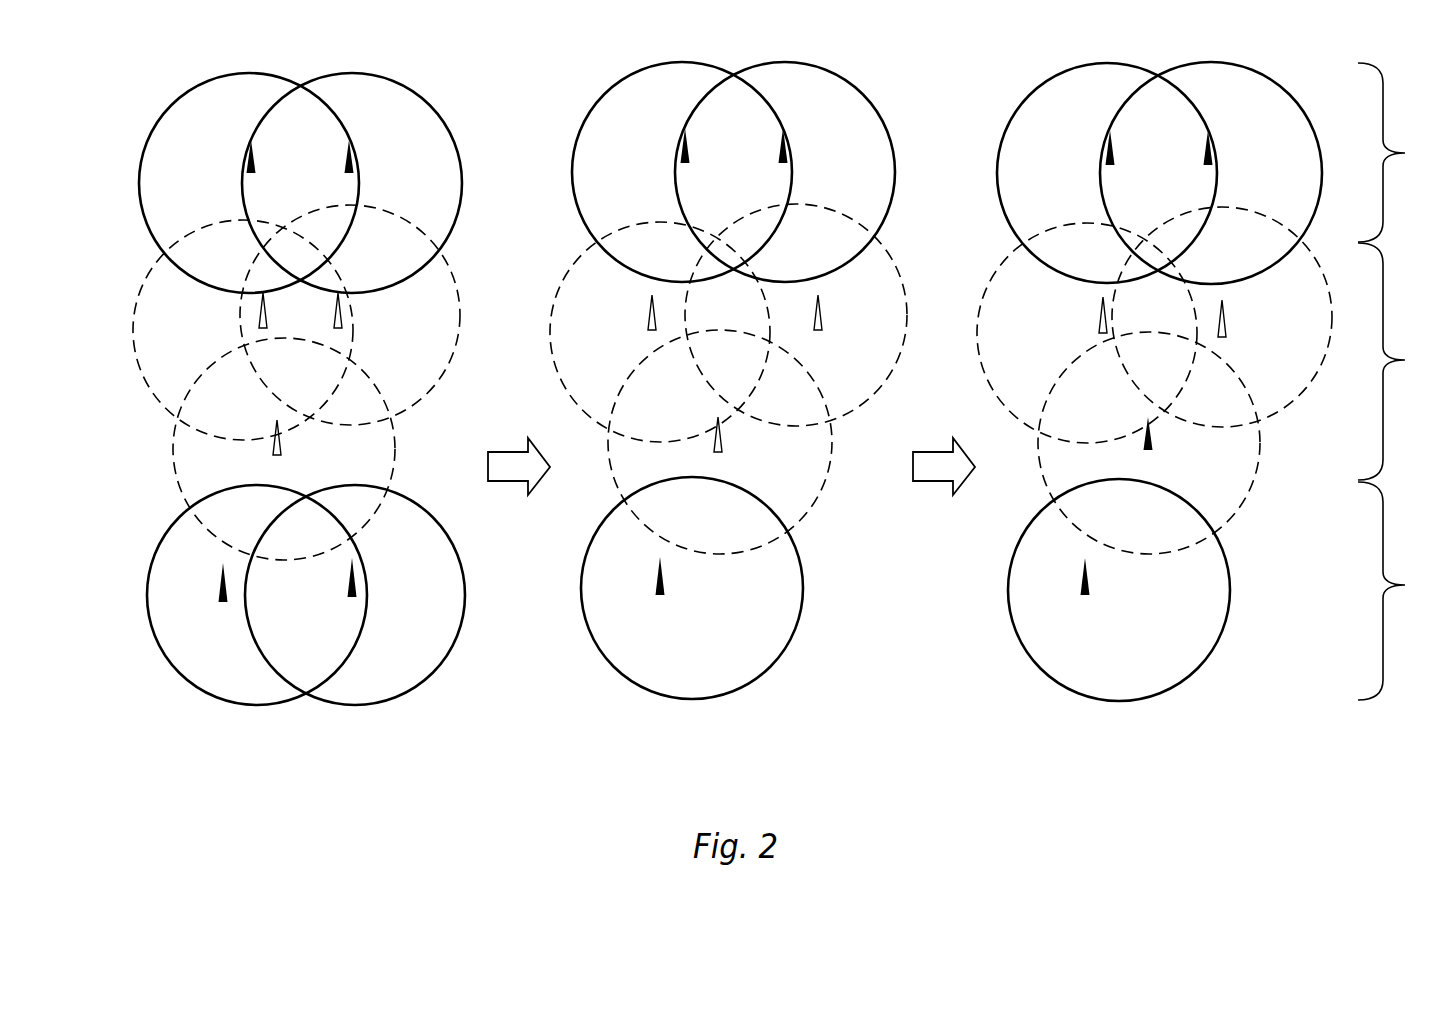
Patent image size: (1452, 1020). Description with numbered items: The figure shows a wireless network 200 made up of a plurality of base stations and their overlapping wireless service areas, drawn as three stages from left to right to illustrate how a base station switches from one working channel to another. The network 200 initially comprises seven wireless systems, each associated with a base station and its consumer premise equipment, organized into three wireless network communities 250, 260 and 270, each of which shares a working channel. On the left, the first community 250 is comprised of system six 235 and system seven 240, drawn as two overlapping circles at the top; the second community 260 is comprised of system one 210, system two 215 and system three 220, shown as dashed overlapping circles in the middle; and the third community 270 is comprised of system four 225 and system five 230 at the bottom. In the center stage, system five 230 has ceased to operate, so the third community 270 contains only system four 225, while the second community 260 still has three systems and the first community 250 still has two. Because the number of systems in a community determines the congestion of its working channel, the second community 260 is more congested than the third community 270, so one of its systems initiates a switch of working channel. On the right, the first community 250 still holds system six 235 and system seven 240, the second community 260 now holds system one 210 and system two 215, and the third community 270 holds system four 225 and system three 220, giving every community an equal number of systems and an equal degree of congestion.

The wireless network 200 is at (774, 425).
The system 1 210 is at (150, 392).
The system 2 215 is at (457, 291).
The system 3 220 is at (394, 452).
The system 4 225 is at (160, 545).
The system 5 230 is at (457, 523).
The system 6 235 is at (167, 110).
The system 7 240 is at (446, 100).
The first community 250 is at (1405, 153).
The second community 260 is at (1405, 360).
The third community 270 is at (1405, 585).